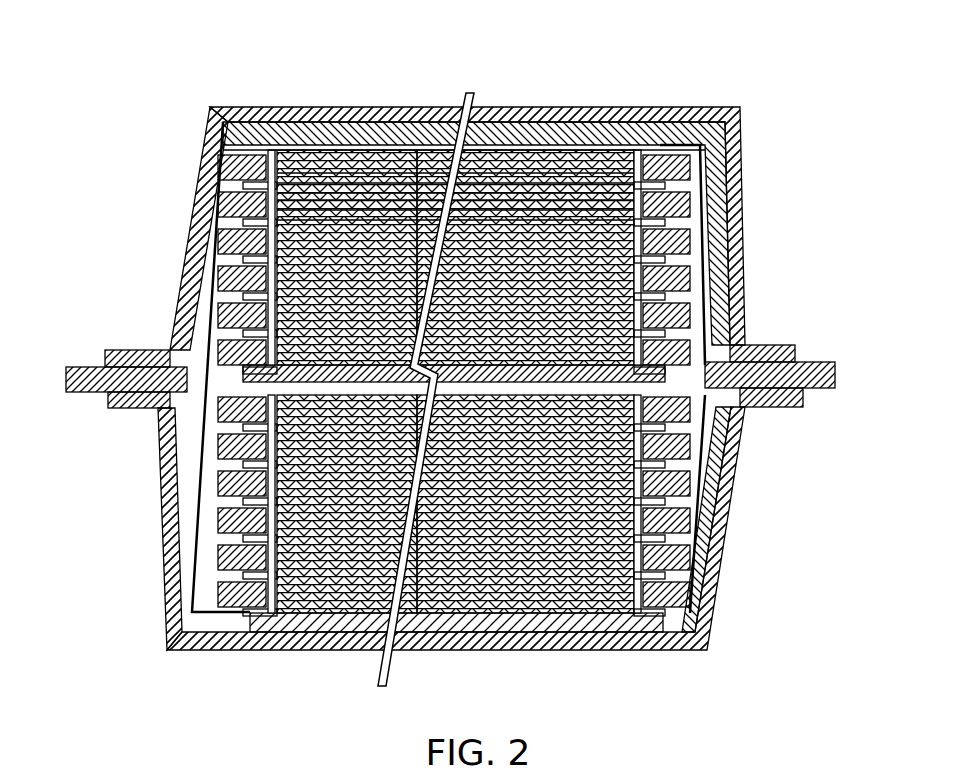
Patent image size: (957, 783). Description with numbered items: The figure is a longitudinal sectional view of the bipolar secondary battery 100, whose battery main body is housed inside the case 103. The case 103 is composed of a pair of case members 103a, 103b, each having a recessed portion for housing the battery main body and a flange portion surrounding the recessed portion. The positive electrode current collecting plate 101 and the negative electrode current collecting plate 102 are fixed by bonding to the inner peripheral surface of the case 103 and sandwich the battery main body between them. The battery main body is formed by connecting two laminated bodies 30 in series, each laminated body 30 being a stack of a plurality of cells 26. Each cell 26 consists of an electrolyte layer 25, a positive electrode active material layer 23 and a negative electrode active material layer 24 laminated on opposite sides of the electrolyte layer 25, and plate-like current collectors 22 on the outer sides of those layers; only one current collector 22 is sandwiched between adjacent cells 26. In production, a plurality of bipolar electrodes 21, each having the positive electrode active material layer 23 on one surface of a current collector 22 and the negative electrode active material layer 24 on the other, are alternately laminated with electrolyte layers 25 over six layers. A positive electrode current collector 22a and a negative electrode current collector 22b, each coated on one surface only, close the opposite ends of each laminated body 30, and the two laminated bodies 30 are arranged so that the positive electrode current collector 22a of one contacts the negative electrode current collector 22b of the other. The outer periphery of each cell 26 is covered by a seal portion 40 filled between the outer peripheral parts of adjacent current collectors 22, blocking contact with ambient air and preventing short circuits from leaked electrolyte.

The bipolar secondary battery 100 is at (735, 95).
The positive electrode current collecting plate 101 is at (815, 372).
The negative electrode current collecting plate 102 is at (86, 372).
The case 103 is at (198, 172).
The case member 103a is at (132, 358).
The case member 103b is at (120, 409).
The bipolar electrode 21 is at (265, 67).
The cell 26 is at (635, 67).
The current collector 22 is at (327, 183).
The positive electrode current collector 22a is at (418, 147).
The negative electrode current collector 22b is at (283, 370).
The positive electrode active material layer 23 is at (368, 193).
The negative electrode active material layer 24 is at (287, 173).
The electrolyte layer 25 is at (548, 200).
The laminated body 30 is at (690, 256).
The seal portion 40 is at (673, 162).